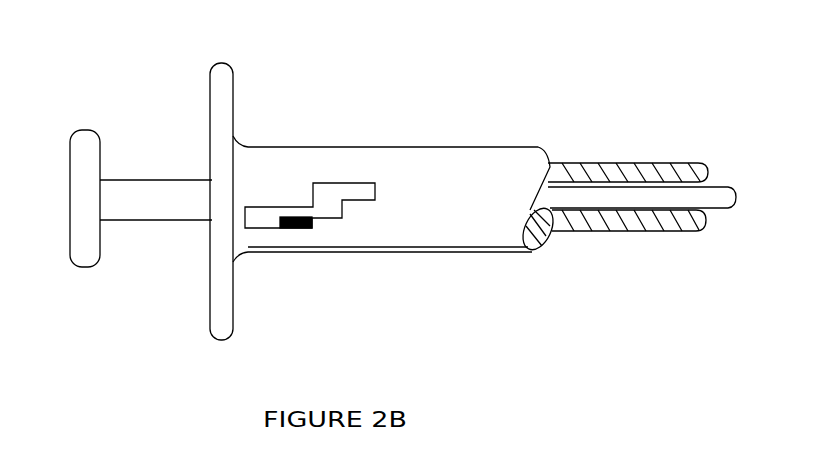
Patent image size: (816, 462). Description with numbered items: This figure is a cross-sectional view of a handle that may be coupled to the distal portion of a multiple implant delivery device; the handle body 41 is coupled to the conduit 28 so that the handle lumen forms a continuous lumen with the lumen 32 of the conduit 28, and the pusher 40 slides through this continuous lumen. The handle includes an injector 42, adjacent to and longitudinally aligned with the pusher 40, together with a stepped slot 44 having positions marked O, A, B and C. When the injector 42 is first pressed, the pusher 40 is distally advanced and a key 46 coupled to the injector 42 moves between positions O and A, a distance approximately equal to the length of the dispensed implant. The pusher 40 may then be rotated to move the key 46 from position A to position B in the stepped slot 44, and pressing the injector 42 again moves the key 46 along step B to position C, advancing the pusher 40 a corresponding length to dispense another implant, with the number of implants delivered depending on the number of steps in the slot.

The injector 42 is at (85, 150).
The syringe barrel 41 is at (392, 87).
The stepped slot 44 is at (320, 183).
The key 46 is at (297, 228).
The lumen 32 is at (712, 152).
The pusher 40 is at (660, 198).
The conduit 28 is at (588, 237).